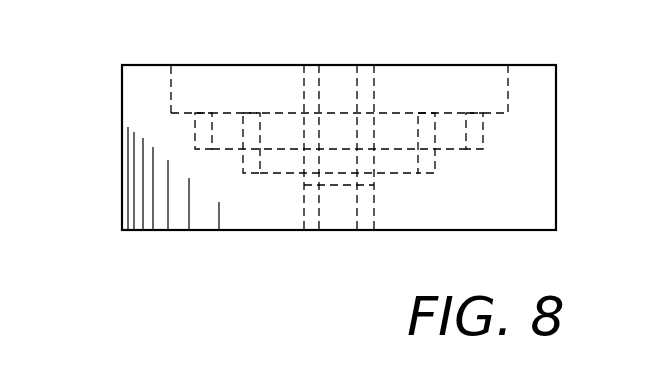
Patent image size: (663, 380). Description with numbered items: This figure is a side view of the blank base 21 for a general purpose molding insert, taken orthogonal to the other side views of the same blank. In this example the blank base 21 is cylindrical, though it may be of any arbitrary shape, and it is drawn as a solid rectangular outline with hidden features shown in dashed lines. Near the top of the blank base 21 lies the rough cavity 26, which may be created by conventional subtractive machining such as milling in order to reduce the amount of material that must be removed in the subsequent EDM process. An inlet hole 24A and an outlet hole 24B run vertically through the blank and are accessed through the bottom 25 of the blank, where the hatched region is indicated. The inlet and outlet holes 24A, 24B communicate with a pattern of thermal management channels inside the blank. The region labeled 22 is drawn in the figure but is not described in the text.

The blank base 21 is at (339, 121).
The upper module region 22 is at (232, 113).
The inlet hole 24A is at (310, 222).
The outlet hole 24B is at (362, 222).
The bottom 25 is at (223, 232).
The rough cavity 26 is at (507, 92).